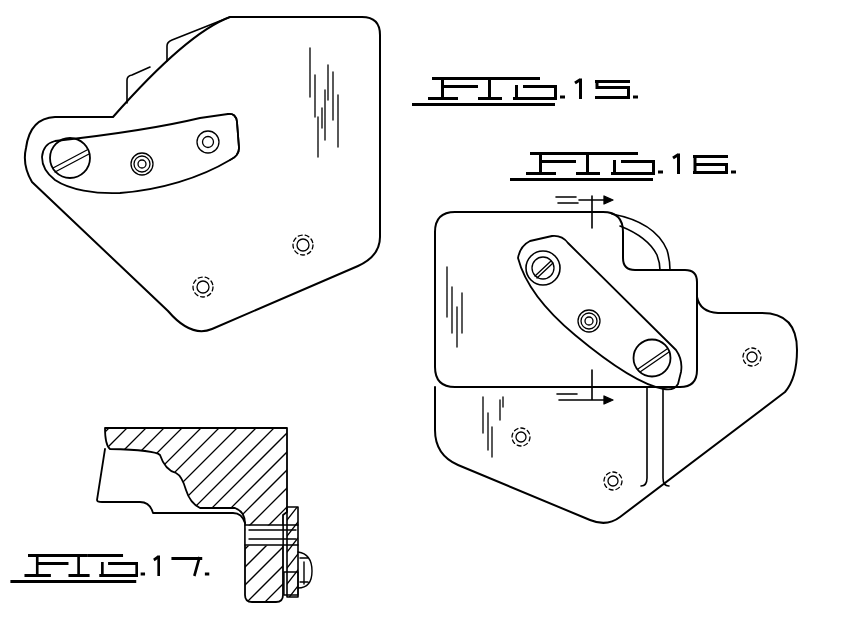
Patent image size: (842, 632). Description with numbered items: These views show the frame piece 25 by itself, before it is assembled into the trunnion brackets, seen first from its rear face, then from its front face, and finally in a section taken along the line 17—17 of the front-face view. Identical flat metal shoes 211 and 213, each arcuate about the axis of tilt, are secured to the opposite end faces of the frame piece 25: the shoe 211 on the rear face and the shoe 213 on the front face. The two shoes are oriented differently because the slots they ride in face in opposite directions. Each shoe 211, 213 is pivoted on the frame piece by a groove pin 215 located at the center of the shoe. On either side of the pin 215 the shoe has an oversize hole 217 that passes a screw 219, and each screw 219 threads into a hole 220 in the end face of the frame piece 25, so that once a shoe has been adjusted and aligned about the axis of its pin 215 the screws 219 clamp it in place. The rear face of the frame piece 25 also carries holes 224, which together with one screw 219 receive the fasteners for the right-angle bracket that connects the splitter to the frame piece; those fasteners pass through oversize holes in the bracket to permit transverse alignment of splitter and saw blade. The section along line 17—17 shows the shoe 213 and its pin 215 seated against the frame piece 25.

In FIG. 15, the frame piece 25 is at (378, 50).
In FIG. 16, the frame piece 25 is at (462, 214).
In FIG. 17, the frame piece 25 is at (214, 428).
In FIG. 15, the flat metal shoe 211 is at (182, 131).
In FIG. 16, the flat metal shoe 213 is at (625, 324).
In FIG. 17, the flat metal shoe 213 is at (299, 511).
In FIG. 15, the groove pin 215 is at (146, 175).
In FIG. 16, the groove pin 215 is at (578, 322).
In FIG. 17, the groove pin 215 is at (300, 532).
In FIG. 15, the oversize hole 217 is at (220, 150).
In FIG. 16, the oversize hole 217 is at (540, 258).
In FIG. 15, the screw 219 is at (68, 142).
In FIG. 16, the screw 219 is at (556, 266).
In FIG. 15, the hole 220 is at (211, 138).
In FIG. 16, the hole 220 is at (750, 367).
In FIG. 15, the hole 224 is at (305, 238).
In FIG. 16, the hole 224 is at (612, 472).
In FIG. 16, the section line 17— 17 is at (645, 210).